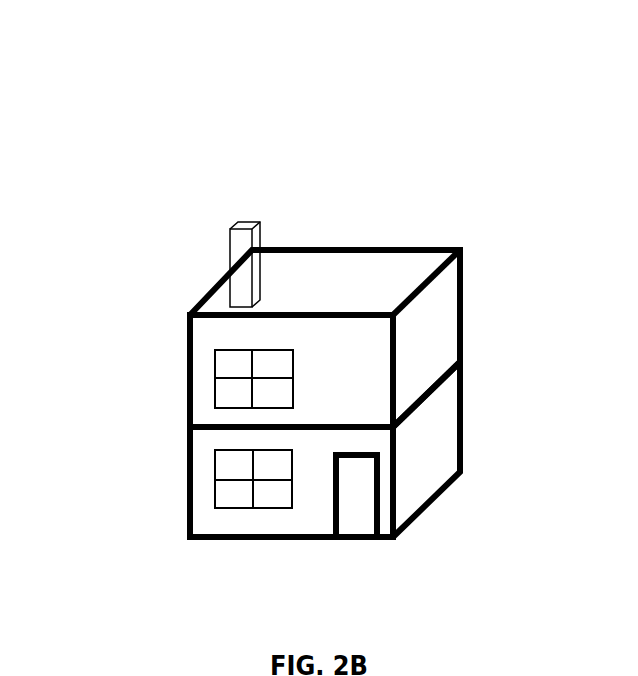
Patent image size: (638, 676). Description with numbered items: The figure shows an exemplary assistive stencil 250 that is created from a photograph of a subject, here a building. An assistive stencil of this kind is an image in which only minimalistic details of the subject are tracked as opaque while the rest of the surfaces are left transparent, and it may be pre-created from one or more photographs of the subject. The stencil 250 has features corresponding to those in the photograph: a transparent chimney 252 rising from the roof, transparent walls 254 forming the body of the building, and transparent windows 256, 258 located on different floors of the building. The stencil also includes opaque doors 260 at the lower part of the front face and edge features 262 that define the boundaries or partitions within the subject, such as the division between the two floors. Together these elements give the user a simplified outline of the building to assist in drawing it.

The stencil 250 is at (275, 322).
The transparent chimney 252 is at (215, 252).
The transparent walls 254 is at (188, 334).
The transparent window 256 is at (215, 386).
The transparent window 258 is at (215, 468).
The opaque doors 260 is at (365, 541).
The edge features 262 is at (468, 357).